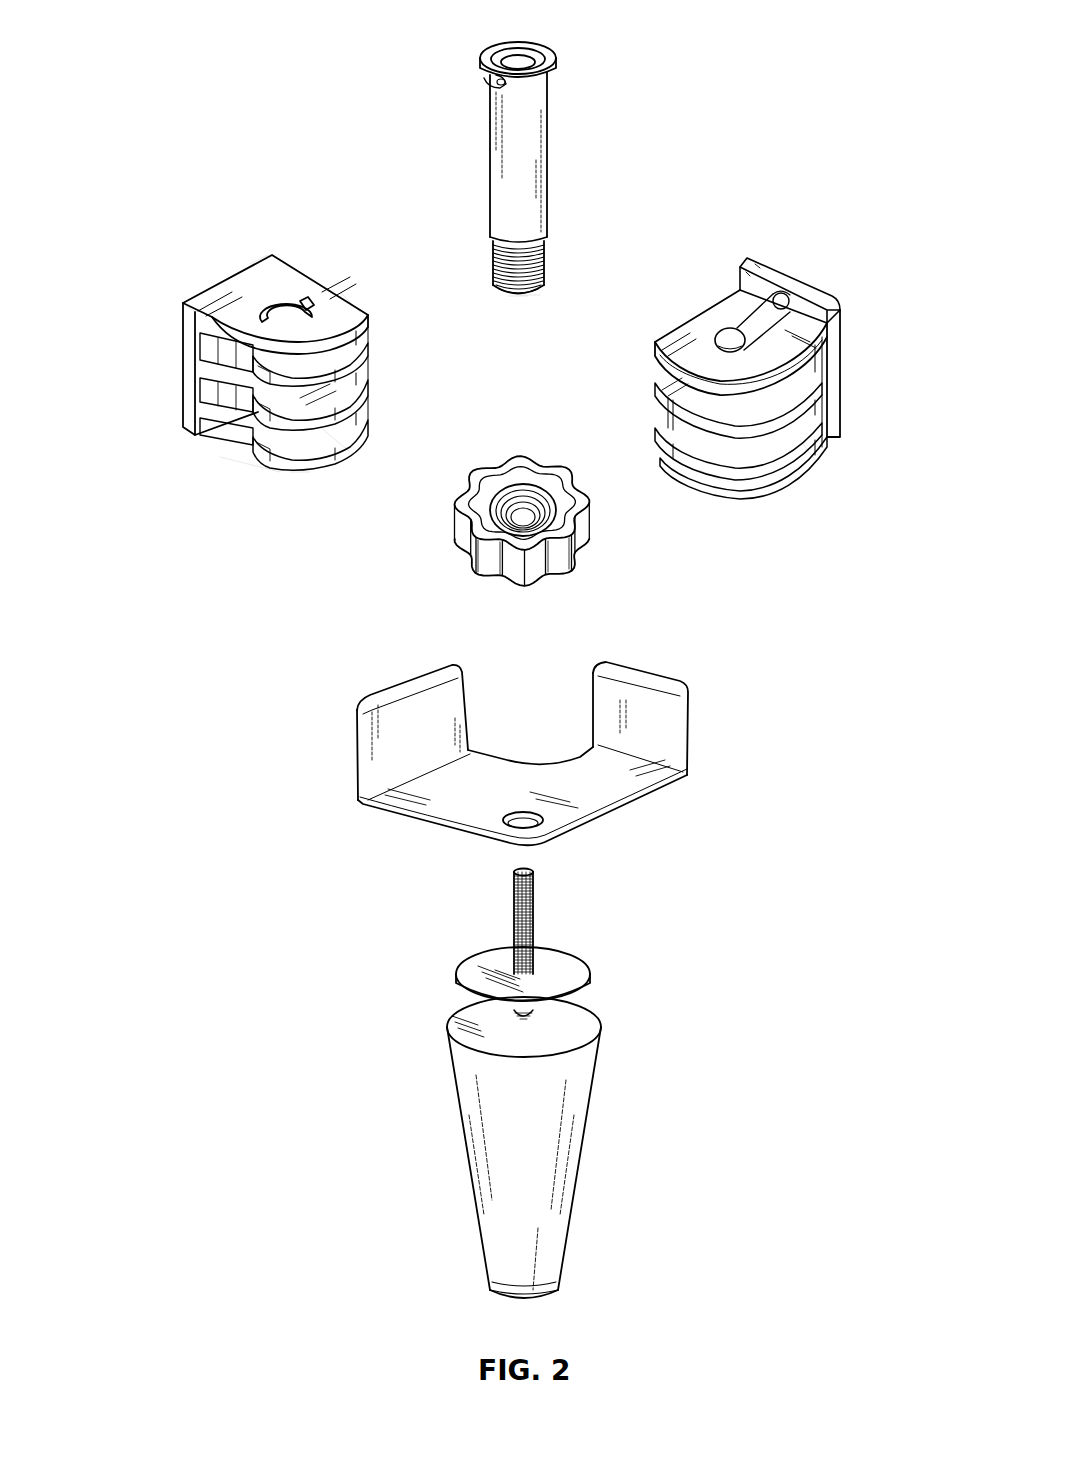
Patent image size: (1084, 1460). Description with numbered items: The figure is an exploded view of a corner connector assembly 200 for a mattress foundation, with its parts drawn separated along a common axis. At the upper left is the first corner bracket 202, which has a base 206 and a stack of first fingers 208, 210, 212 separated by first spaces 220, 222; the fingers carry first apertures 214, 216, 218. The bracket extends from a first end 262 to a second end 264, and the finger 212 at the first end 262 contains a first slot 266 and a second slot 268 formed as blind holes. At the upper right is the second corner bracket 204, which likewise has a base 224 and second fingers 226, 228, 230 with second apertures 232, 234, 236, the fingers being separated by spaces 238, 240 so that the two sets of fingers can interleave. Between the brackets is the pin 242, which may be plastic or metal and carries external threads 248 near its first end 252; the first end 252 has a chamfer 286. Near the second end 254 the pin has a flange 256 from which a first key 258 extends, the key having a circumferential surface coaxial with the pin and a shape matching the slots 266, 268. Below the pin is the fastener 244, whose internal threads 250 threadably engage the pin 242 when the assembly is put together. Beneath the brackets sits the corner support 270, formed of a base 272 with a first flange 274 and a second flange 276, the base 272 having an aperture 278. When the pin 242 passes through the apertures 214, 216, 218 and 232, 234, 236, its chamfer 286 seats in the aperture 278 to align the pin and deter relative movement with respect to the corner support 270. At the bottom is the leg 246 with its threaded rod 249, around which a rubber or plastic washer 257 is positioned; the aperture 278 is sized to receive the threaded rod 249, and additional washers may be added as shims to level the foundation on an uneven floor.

The corner connector assembly 200 is at (146, 40).
The first corner bracket 202 is at (258, 370).
The second corner bracket 204 is at (755, 382).
The base 206 is at (190, 347).
The first finger 208 is at (318, 442).
The first finger 210 is at (300, 402).
The first finger 212 is at (292, 370).
The first aperture 214 is at (310, 437).
The first aperture 216 is at (300, 397).
The first aperture 218 is at (290, 332).
The first space 220 is at (320, 442).
The first space 222 is at (300, 366).
The base 224 is at (822, 287).
The second finger 226 is at (350, 320).
The second finger 228 is at (800, 404).
The second finger 230 is at (770, 367).
The second aperture 232 is at (710, 442).
The second aperture 234 is at (802, 442).
The second aperture 236 is at (790, 322).
The first space 238 is at (668, 434).
The first space 240 is at (680, 362).
The pin 242 is at (519, 193).
The fastener 244 is at (498, 512).
The leg 246 is at (568, 1081).
The external threads 248 is at (500, 257).
The threaded rod 249 is at (534, 907).
The internal threads 250 is at (536, 507).
The first end 252 is at (512, 299).
The second end 254 is at (551, 50).
The flange 256 is at (498, 44).
The washer 257 is at (565, 966).
The first key 258 is at (490, 84).
The first end 262 is at (262, 277).
The second end 264 is at (300, 472).
The first slot 266 is at (280, 347).
The second slot 268 is at (312, 302).
The corner support 270 is at (521, 779).
The base 272 is at (430, 812).
The first flange 274 is at (652, 722).
The second flange 276 is at (376, 750).
The aperture 278 is at (510, 828).
The chamfer 286 is at (540, 294).